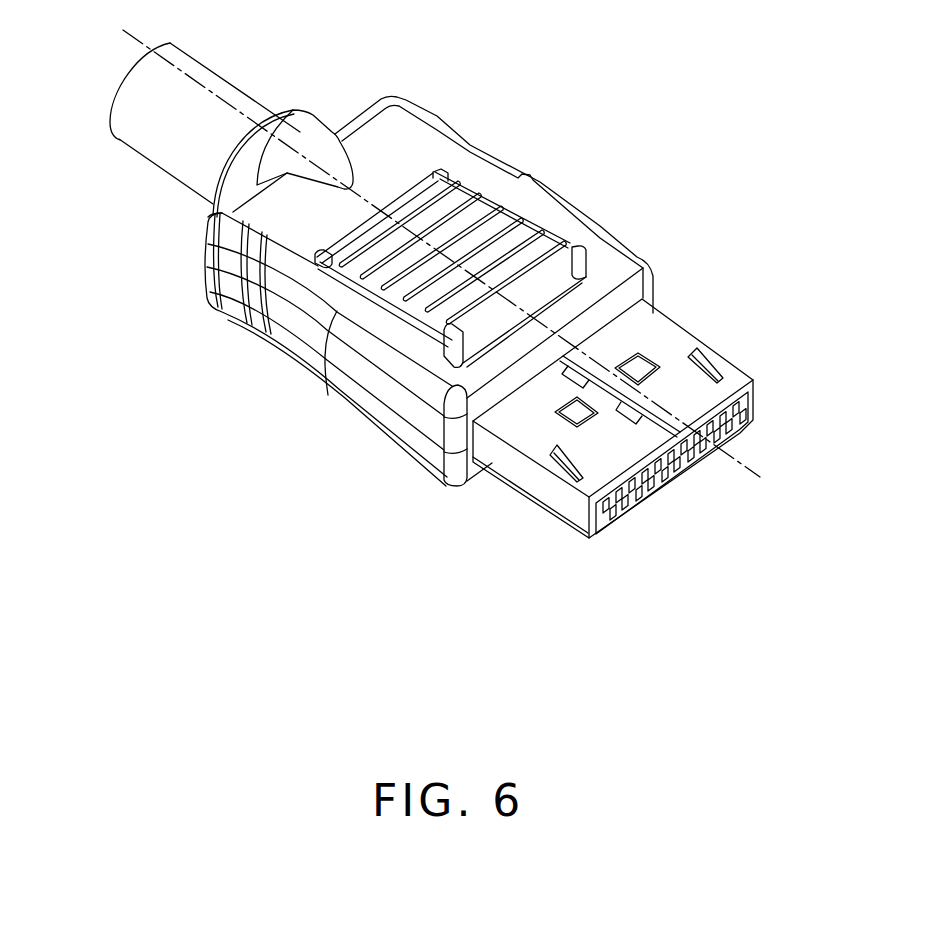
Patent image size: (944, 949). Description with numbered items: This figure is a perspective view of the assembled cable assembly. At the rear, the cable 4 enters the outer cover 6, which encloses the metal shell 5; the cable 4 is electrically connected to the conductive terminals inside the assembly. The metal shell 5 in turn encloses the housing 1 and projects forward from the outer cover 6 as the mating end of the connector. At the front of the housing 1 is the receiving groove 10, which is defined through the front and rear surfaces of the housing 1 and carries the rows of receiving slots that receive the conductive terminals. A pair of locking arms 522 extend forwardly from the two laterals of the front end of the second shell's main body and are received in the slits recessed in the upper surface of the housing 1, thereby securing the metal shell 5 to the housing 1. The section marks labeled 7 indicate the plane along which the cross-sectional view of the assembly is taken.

The housing 1 is at (461, 290).
The cable 4 is at (177, 150).
The metal shell 5 is at (653, 392).
The outer cover 6 is at (403, 157).
The section line 7- 7 is at (123, 30).
The receiving groove 10 is at (742, 434).
The locking arms 522 is at (697, 358).